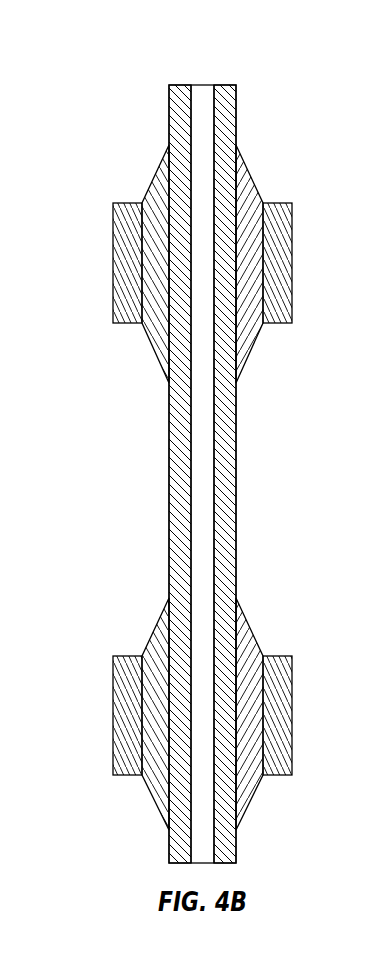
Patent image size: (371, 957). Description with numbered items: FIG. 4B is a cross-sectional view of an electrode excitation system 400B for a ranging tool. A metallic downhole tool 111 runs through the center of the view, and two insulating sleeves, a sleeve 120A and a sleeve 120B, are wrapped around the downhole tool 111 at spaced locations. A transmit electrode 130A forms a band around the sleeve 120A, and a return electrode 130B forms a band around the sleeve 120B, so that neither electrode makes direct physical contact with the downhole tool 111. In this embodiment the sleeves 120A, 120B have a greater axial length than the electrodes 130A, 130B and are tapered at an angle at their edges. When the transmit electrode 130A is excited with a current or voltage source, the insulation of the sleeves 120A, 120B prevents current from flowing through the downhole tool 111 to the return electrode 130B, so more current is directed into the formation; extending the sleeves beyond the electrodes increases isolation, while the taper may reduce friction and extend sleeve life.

The electrode excitation system 400B is at (141, 63).
The downhole tool 111 is at (169, 455).
The sleeve 120A is at (158, 169).
The transmit electrode 130A is at (132, 203).
The sleeve 120B is at (158, 622).
The return electrode 130B is at (132, 656).